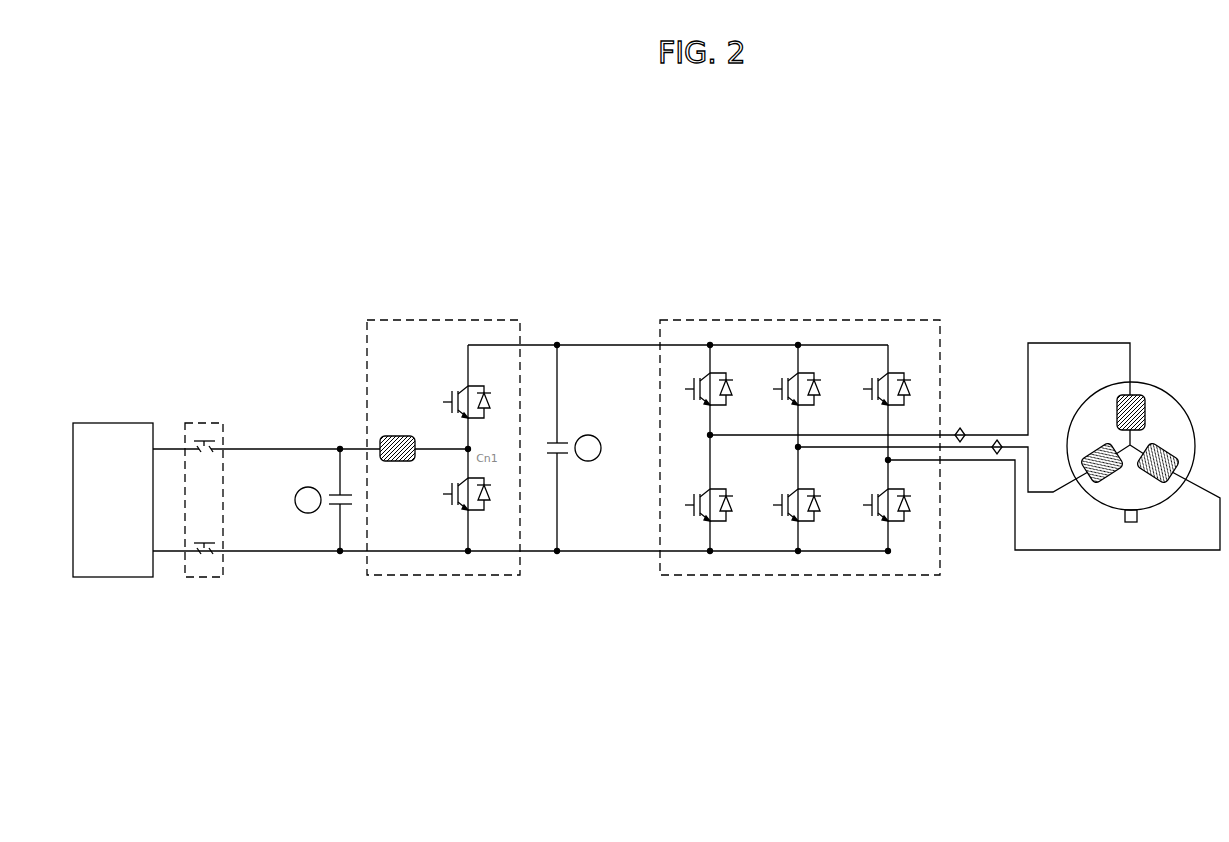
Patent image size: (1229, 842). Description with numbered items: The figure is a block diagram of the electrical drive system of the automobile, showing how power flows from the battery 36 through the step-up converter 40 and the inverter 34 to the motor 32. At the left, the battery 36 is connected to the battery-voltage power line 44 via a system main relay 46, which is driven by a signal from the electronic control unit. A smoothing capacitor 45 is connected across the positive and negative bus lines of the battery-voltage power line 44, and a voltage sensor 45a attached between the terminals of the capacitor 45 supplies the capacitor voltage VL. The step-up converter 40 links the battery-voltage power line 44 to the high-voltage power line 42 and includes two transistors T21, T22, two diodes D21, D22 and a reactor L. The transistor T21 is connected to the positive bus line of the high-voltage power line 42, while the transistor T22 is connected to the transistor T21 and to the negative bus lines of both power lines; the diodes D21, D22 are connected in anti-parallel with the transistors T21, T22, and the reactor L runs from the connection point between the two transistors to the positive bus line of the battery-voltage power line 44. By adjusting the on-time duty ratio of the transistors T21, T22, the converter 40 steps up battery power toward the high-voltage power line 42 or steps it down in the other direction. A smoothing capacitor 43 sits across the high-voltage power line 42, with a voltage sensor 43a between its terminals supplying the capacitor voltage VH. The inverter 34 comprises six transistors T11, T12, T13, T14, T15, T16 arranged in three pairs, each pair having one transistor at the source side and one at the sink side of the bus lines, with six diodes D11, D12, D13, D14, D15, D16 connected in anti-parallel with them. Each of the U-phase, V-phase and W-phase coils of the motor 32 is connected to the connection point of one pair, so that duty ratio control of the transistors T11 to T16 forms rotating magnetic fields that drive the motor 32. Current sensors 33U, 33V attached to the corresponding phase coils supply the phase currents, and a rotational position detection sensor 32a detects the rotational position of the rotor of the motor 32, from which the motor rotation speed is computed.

The battery 36 is at (112, 422).
The system main relay 46 is at (204, 422).
The battery-voltage power line 44 is at (287, 552).
The smoothing capacitor 45 is at (334, 490).
The voltage sensor 45a is at (308, 486).
The step-up converter 40 is at (443, 318).
The reactor L is at (397, 434).
The transistor T21 is at (446, 400).
The transistor T22 is at (446, 492).
The diode D21 is at (486, 412).
The diode D22 is at (486, 505).
The high-voltage power line 42 is at (623, 550).
The smoothing capacitor 43 is at (556, 441).
The voltage sensor 43a is at (587, 434).
The inverter 34 is at (800, 318).
The transistor T11 is at (687, 387).
The transistor T12 is at (775, 387).
The transistor T13 is at (865, 387).
The transistor T14 is at (687, 503).
The transistor T15 is at (775, 503).
The transistor T16 is at (865, 503).
The diode D11 is at (727, 404).
The diode D12 is at (815, 404).
The diode D13 is at (905, 404).
The diode D14 is at (727, 520).
The diode D15 is at (815, 520).
The diode D16 is at (905, 520).
The current sensor 33U is at (960, 426).
The current sensor 33V is at (998, 438).
The motor 32 is at (1160, 386).
The rotational position detection sensor 32a is at (1138, 516).